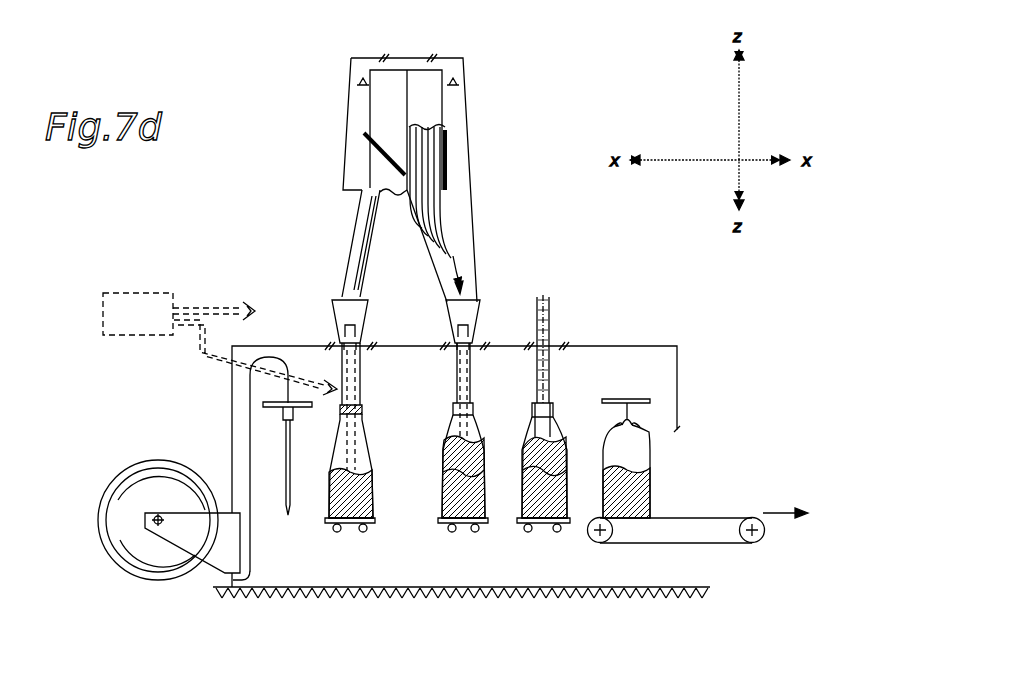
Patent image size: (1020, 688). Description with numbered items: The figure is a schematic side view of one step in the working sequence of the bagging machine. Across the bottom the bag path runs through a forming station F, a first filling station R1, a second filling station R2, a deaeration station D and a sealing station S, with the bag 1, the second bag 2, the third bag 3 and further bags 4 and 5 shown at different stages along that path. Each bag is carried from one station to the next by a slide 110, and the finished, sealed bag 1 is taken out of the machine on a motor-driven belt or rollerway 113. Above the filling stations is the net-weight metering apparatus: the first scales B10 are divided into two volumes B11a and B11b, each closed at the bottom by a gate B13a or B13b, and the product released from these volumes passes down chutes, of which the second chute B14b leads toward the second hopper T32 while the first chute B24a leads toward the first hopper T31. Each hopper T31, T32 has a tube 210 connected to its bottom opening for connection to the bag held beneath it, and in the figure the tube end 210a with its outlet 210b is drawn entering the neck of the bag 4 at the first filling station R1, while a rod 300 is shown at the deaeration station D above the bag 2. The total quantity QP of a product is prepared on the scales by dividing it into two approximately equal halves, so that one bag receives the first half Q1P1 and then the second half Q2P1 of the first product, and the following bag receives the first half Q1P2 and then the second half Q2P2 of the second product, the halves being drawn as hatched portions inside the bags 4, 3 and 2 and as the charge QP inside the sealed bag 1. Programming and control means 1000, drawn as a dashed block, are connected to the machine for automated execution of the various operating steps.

The first scales B10 is at (319, 101).
The first half-volume of the first scales B11a is at (382, 82).
The second half-volume of the first scales B11b is at (433, 78).
The gate of the first half-volume B13a is at (363, 134).
The gate of the second half-volume B13b is at (447, 168).
The second chute of the first scales B14b is at (473, 217).
The first chute of the second scales B24a is at (358, 215).
The first half of product P2 Q1P2 is at (360, 247).
The second half of product P1 Q2P1 is at (438, 148).
The second half of product P2 Q2P2 is at (562, 448).
The first half of product P1 Q1P1 is at (445, 510).
The total quantity of product QP is at (642, 498).
The hopper of the first filling station T31 is at (342, 307).
The hopper of the second filling station T32 is at (470, 307).
The tube 210 is at (342, 372).
The filling tube wall 210a is at (358, 405).
The filling tube outlet end 210b is at (361, 409).
The compacting rod 300 is at (548, 368).
The programming and control means 1000 is at (168, 327).
The slide 110 is at (638, 400).
The motor-driven belt or rollerway 113 is at (725, 537).
The fifth bag 5 is at (287, 438).
The fourth bag 4 is at (372, 437).
The third bag 3 is at (480, 423).
The second bag 2 is at (553, 427).
The bag 1 is at (642, 433).
The forming station F is at (296, 579).
The first filling station R1 is at (366, 579).
The second filling station R2 is at (481, 579).
The deaeration station D is at (552, 579).
The sealing station S is at (612, 579).